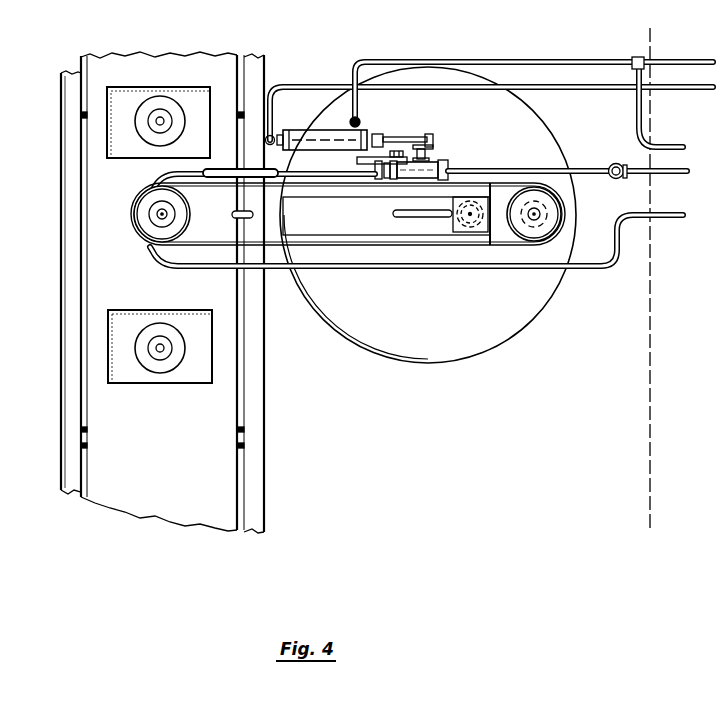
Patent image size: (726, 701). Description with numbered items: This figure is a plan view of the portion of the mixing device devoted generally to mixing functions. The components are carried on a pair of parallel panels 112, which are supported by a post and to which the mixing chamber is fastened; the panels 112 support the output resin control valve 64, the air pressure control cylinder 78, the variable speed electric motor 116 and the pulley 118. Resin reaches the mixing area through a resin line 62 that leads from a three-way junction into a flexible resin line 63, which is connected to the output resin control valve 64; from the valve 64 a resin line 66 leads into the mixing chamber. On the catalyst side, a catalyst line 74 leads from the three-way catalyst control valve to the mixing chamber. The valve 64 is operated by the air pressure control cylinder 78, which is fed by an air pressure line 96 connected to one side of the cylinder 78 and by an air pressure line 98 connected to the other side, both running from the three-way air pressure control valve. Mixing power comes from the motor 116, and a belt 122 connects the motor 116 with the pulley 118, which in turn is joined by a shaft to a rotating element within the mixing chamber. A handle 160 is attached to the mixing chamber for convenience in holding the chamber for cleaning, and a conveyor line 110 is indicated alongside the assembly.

The resin line 62 is at (676, 174).
The flexible resin line 63 is at (525, 176).
The output resin control valve 64 is at (440, 159).
The resin line 66 is at (342, 168).
The catalyst line 74 is at (463, 269).
The air pressure control cylinder 78 is at (312, 131).
The air pressure line 96 is at (312, 87).
The air pressure line 98 is at (529, 62).
The conveyor line 110 is at (278, 396).
The parallel panels 112 is at (344, 237).
The variable speed electric motor 116 is at (527, 246).
The pulley 118 is at (152, 196).
The belt 122 is at (393, 184).
The handle 160 is at (236, 216).